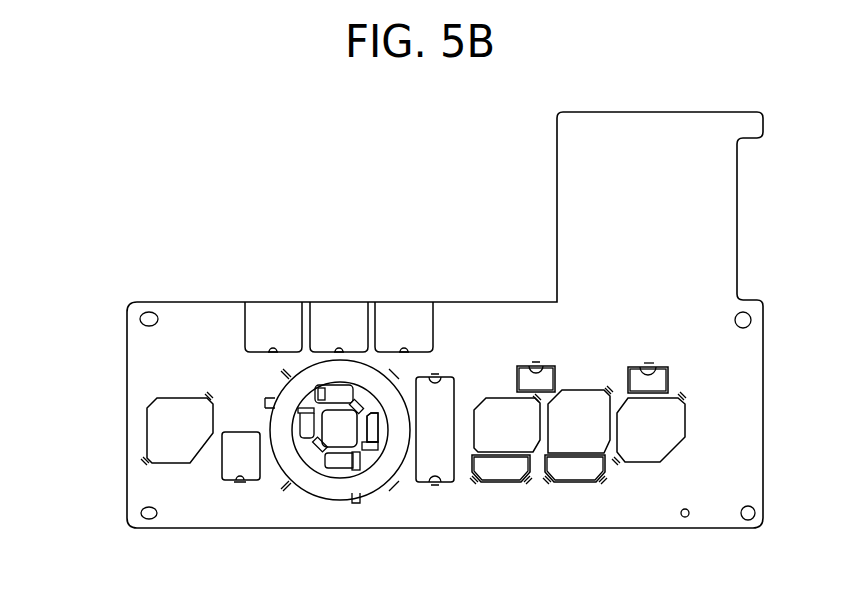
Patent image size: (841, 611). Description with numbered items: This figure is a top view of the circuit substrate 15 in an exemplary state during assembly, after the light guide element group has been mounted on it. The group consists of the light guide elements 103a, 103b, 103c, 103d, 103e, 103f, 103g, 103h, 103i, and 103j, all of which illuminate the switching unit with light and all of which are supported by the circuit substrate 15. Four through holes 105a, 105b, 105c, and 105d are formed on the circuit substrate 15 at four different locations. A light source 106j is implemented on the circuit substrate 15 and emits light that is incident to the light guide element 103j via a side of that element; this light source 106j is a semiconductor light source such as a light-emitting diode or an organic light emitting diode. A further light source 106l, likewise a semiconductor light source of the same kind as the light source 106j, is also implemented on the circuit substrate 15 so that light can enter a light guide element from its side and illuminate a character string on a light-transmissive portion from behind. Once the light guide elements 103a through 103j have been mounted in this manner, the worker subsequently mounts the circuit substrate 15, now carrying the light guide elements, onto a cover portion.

The circuit substrate 15 is at (437, 182).
The light guide element 103a is at (333, 330).
The light guide element 103b is at (157, 434).
The light guide element 103c is at (250, 465).
The light guide element 103d is at (313, 482).
The light guide element 103e is at (342, 437).
The light guide element 103f is at (370, 427).
The light guide element 103g is at (441, 387).
The light guide element 103h is at (497, 408).
The light guide element 103i is at (585, 440).
The light guide element 103j is at (660, 452).
The through hole 105a is at (547, 366).
The through hole 105b is at (500, 470).
The through hole 105c is at (658, 380).
The through hole 105d is at (575, 470).
The light source 106j is at (619, 458).
The light source 106l is at (648, 363).